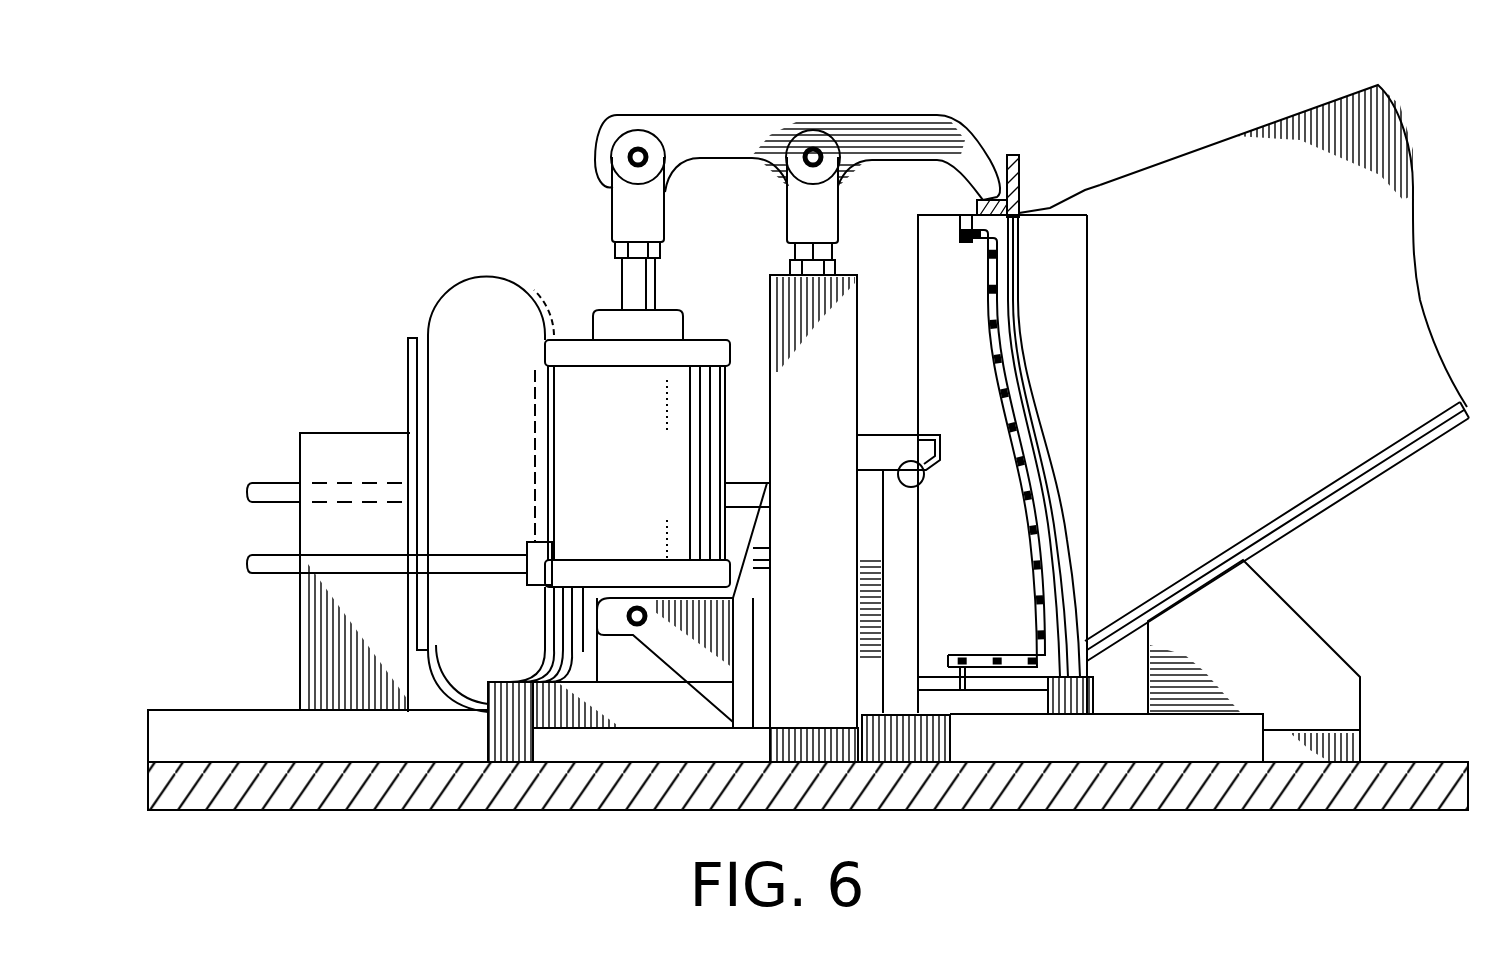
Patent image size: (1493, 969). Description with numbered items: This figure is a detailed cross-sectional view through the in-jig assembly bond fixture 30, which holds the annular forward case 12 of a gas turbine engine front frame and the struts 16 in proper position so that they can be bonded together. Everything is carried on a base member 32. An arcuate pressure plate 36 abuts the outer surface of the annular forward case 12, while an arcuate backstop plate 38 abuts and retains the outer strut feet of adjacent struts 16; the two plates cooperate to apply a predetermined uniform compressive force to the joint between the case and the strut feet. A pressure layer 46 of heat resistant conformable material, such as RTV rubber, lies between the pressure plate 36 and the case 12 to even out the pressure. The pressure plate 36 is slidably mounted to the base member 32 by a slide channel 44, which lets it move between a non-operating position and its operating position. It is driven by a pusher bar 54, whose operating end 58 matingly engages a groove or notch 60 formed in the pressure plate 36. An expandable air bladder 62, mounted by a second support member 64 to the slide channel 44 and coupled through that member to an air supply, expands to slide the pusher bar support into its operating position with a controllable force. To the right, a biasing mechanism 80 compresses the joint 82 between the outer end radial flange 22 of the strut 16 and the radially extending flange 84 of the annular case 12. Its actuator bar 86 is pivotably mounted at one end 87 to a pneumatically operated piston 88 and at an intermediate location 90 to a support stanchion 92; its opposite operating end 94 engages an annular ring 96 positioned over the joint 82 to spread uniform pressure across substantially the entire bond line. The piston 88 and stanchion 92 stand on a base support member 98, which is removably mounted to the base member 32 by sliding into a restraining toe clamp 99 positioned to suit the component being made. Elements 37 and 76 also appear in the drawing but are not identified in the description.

The annular forward case 12 is at (1002, 272).
The strut 16 is at (1267, 346).
The outer end radial flange 22 is at (1022, 212).
The in-jig assembly bond fixture 30 is at (335, 150).
The base member 32 is at (1258, 812).
The arcuate pressure plate 36 is at (957, 592).
The support block 37 is at (1037, 688).
The arcuate backstop plate 38 is at (1088, 358).
The slide channel 44 is at (1365, 733).
The pressure layer 46 is at (988, 336).
The pusher bar 54 is at (870, 432).
The operating end 58 is at (928, 445).
The groove or notch 60 is at (915, 484).
The expandable air bladder 62 is at (485, 280).
The second support member 64 is at (330, 544).
The wedge support 76 is at (1222, 673).
The biasing mechanism 80 is at (801, 155).
The joint 82 is at (990, 242).
The radially extending flange 84 is at (958, 220).
The actuator bar 86 is at (693, 147).
The one end 87 is at (628, 128).
The pneumatically operated piston 88 is at (620, 287).
The intermediate location 90 is at (850, 180).
The support stanchion 92 is at (800, 507).
The operating end 94 is at (977, 148).
The annular ring 96 is at (1020, 165).
The base support member 98 is at (637, 742).
The restraining toe clamp 99 is at (490, 730).